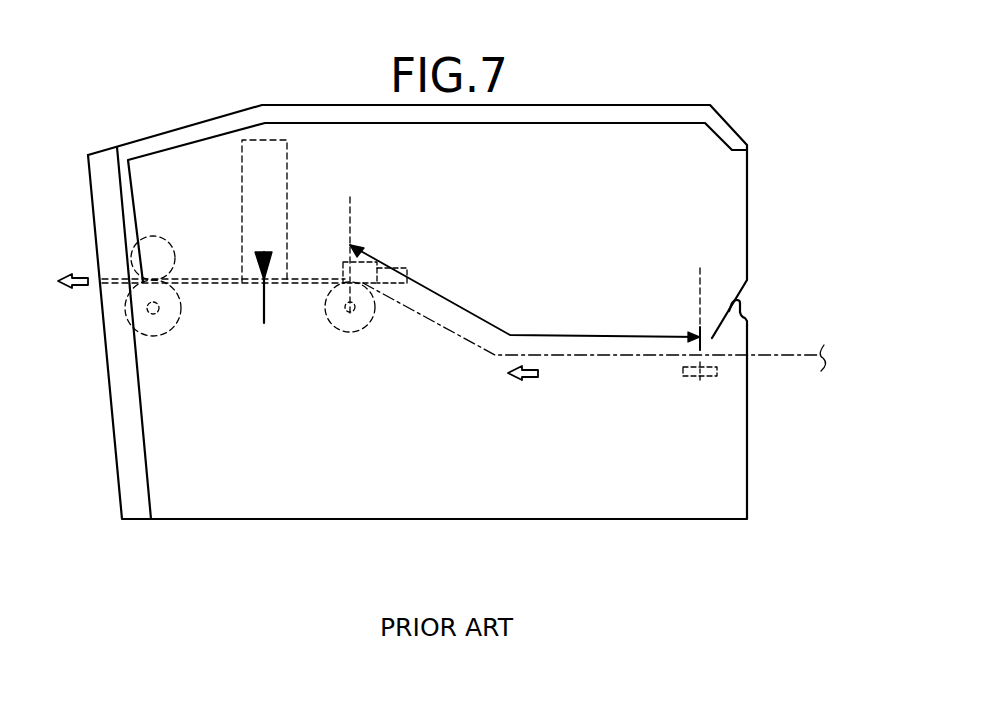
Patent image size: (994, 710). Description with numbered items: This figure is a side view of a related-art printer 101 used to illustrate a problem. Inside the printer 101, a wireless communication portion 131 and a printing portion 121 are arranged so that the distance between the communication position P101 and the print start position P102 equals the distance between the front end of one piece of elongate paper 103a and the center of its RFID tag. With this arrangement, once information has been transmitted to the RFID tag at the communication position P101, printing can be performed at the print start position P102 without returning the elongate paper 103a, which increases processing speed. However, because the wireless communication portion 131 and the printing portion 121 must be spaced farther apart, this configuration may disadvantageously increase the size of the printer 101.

The printer 101 is at (716, 533).
The printing portion 121 is at (378, 251).
The wireless communication portion 131 is at (689, 390).
The elongate paper 103a is at (577, 358).
The communication position P101 is at (700, 292).
The print start position P102 is at (349, 219).